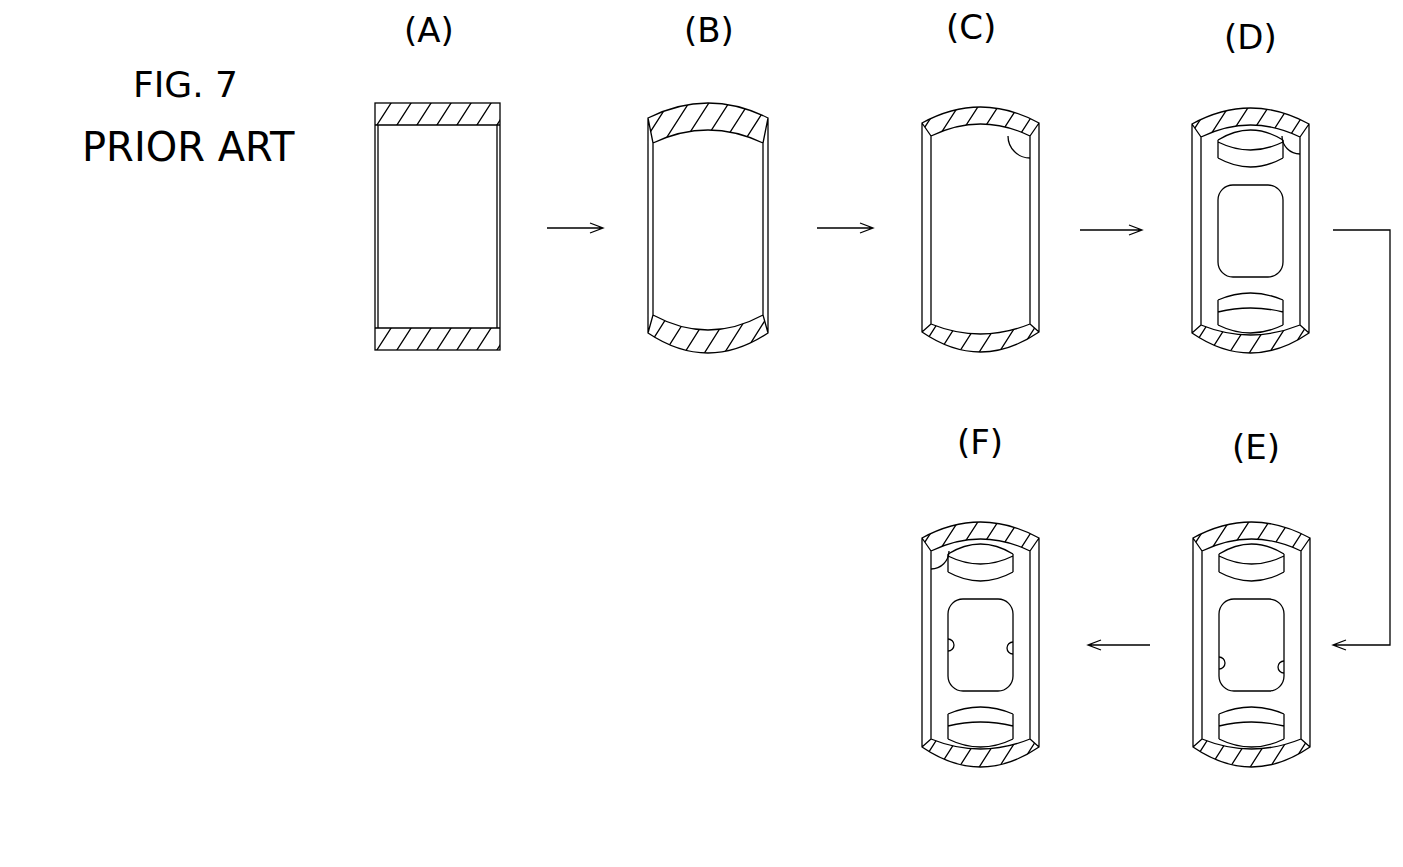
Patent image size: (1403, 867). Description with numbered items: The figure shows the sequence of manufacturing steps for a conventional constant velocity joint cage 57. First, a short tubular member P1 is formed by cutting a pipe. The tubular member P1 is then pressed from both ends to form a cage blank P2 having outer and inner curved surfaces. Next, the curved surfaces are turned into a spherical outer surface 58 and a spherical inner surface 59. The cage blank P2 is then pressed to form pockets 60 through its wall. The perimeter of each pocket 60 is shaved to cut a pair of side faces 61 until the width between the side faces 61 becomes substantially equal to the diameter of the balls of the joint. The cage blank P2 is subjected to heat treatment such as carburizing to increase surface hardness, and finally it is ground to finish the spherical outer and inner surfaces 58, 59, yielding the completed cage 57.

The short tubular member P1 is at (470, 94).
The cage blank P2 is at (1214, 516).
The cage 57 is at (925, 519).
The spherical outer surface 58 is at (995, 108).
The spherical inner surface 59 is at (1028, 156).
The pocket 60 is at (1275, 220).
The side face 61 is at (1225, 663).